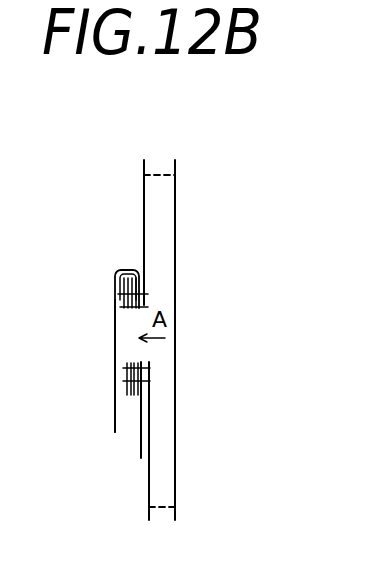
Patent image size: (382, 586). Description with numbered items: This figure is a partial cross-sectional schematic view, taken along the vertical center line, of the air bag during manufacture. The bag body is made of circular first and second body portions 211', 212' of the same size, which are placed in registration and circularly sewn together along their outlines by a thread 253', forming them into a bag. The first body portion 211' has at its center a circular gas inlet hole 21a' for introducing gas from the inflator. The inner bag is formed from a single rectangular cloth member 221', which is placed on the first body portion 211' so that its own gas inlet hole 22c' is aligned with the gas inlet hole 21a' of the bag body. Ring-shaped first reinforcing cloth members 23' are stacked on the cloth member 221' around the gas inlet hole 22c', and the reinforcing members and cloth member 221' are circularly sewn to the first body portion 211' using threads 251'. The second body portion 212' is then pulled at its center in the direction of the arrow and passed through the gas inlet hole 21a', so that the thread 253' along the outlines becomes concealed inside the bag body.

The thread 253' is at (199, 308).
The first body portion 211' is at (72, 232).
The second body portion 212' is at (249, 340).
The first reinforcing cloth member 23' is at (86, 326).
The threads 251' is at (218, 342).
The gas inlet hole 22c' is at (81, 390).
The gas inlet hole 21a' is at (236, 423).
The cloth member 221' is at (71, 385).